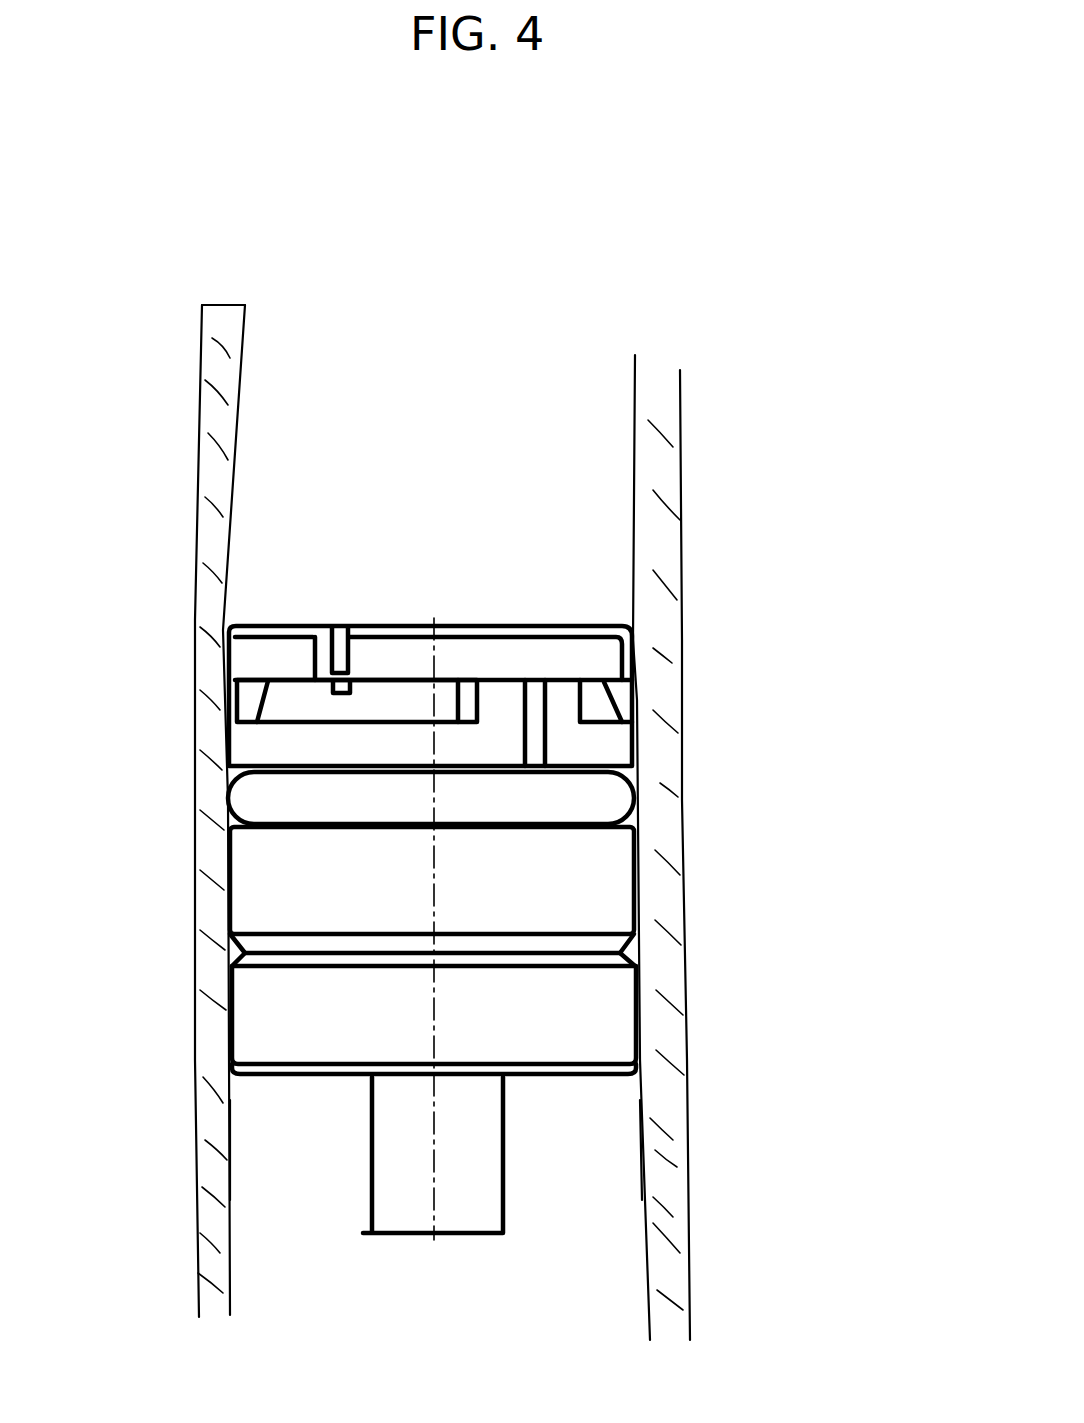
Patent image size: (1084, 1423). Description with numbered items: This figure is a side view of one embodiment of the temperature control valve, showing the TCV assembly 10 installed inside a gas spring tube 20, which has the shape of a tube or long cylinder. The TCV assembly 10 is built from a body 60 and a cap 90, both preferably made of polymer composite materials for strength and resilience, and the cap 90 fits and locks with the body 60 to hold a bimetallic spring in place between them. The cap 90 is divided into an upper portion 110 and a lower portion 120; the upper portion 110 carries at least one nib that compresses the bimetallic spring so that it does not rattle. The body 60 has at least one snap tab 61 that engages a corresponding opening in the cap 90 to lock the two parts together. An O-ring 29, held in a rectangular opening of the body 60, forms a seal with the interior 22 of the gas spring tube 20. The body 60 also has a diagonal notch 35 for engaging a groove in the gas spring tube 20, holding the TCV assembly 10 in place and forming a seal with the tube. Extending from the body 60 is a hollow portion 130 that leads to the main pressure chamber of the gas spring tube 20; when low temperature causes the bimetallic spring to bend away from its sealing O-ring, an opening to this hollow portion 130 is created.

The TCV assembly 10 is at (511, 653).
The gas spring tube 20 is at (193, 533).
The interior 22 is at (227, 520).
The O-ring 29 is at (610, 800).
The diagonal notch 35 is at (637, 952).
The body 60 is at (433, 950).
The snap tab 61 is at (613, 697).
The cap 90 is at (223, 713).
The upper portion 110 is at (607, 660).
The lower portion 120 is at (613, 752).
The hollow portion 130 is at (490, 1118).